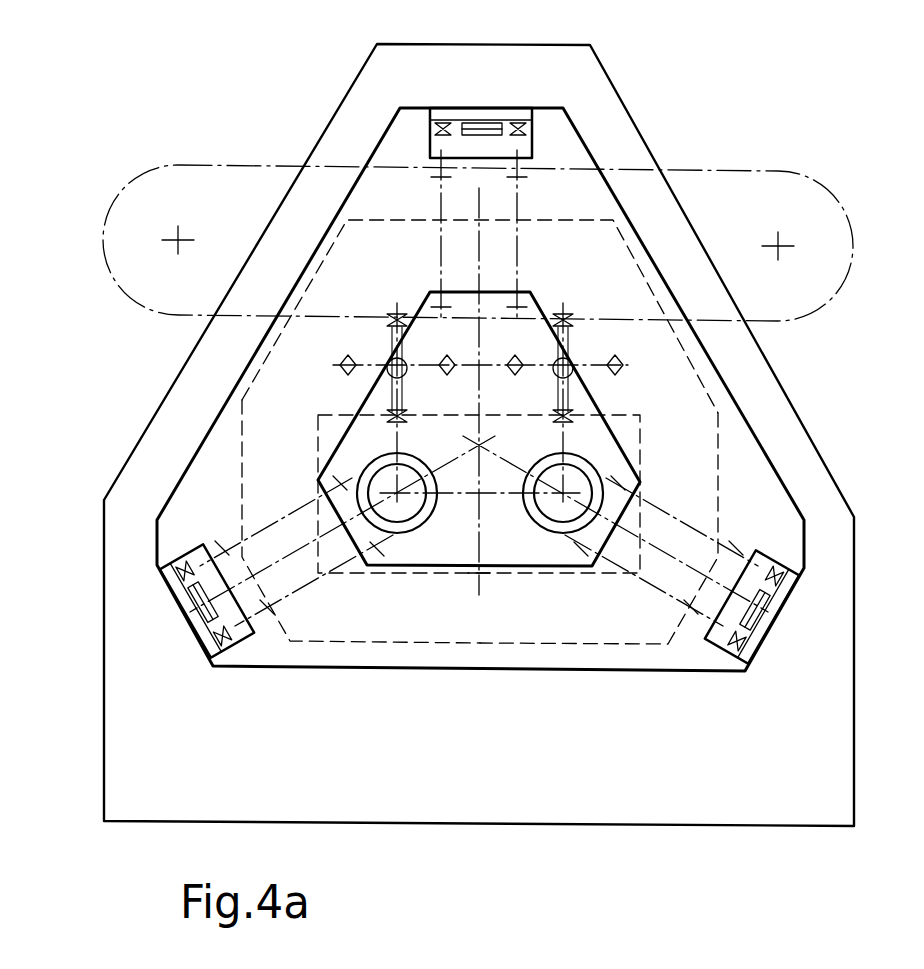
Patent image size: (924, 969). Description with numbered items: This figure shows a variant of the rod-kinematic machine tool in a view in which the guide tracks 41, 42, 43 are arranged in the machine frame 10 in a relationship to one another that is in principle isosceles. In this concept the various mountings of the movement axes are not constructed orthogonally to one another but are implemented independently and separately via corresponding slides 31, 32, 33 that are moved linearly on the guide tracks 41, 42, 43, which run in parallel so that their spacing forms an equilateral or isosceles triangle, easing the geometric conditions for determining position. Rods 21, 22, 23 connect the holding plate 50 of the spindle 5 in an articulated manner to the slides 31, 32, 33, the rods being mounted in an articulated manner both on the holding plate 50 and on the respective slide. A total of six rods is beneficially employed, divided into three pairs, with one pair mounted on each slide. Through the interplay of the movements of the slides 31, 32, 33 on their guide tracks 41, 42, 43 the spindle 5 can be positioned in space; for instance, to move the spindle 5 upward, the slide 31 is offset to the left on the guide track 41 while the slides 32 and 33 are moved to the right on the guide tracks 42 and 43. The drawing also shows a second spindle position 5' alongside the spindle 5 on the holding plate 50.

The machine frame 10 is at (357, 113).
The rod 21 is at (517, 212).
The rod 22 is at (727, 536).
The rod 23 is at (310, 588).
The slide 31 is at (522, 145).
The slide 32 is at (728, 620).
The slide 33 is at (167, 508).
The guide track 41 is at (520, 108).
The guide track 42 is at (773, 627).
The guide track 43 is at (178, 606).
The holding plate 50 is at (602, 447).
The spindle 5 is at (397, 541).
The second spindle 5' is at (563, 541).